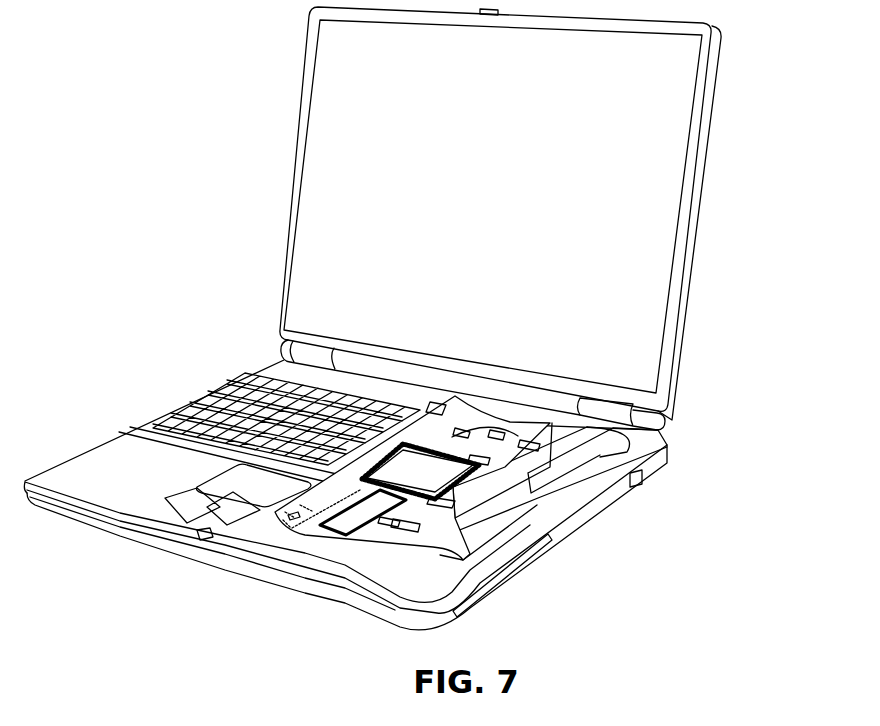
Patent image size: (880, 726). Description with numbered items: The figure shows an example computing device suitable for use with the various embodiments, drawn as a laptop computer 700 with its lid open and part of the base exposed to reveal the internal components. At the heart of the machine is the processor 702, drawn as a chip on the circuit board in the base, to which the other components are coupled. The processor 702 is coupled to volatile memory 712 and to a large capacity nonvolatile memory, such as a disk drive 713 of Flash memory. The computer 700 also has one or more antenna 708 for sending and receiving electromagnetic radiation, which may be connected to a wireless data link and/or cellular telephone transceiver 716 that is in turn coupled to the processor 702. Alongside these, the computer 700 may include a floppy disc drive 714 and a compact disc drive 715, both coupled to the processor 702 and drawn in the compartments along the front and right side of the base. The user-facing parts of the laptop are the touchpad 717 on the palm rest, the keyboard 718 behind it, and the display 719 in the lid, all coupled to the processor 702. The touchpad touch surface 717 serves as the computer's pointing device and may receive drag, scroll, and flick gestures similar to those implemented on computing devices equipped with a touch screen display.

The laptop computer 700 is at (104, 64).
The processor 702 is at (420, 471).
The antenna 708 is at (497, 473).
The volatile memory 712 is at (352, 515).
The disk drive 713 is at (460, 553).
The floppy disc drive 714 is at (495, 517).
The compact disc (CD) drive 715 is at (578, 462).
The cellular telephone transceiver 716 is at (505, 465).
The touchpad touch surface 717 is at (228, 488).
The keyboard 718 is at (185, 412).
The display 719 is at (661, 356).